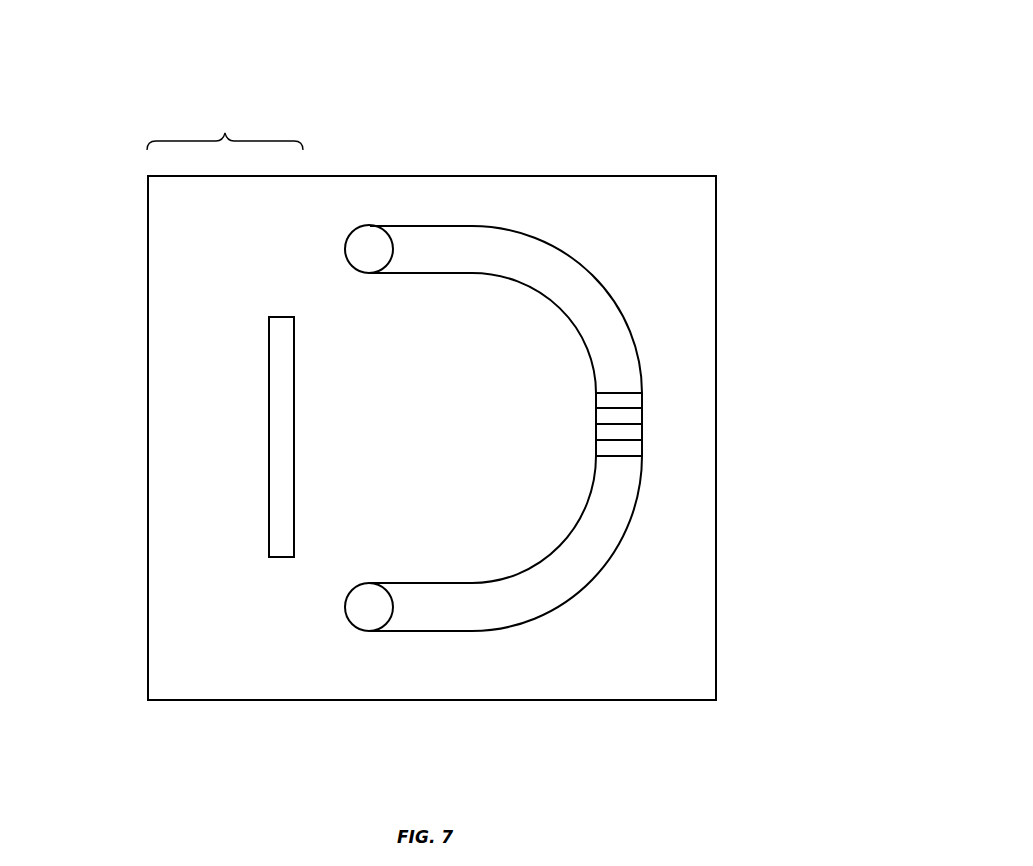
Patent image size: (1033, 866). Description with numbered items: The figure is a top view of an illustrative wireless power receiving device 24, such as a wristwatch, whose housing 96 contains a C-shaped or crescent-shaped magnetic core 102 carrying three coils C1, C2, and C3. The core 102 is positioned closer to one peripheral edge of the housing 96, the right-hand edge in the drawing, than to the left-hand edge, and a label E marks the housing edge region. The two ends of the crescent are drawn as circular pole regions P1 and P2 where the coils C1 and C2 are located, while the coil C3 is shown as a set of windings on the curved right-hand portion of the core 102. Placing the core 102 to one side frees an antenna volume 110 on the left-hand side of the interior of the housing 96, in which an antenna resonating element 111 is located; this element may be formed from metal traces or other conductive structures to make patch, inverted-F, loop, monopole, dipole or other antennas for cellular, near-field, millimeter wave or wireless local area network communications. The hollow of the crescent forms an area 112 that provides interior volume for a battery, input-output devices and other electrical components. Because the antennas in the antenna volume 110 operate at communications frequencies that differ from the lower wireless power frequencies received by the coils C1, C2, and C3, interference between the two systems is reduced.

The device 24 is at (622, 94).
The housing 96 is at (240, 700).
The antenna volume 110 is at (225, 131).
The antenna resonating element 111 is at (278, 352).
The core 102 is at (583, 577).
The area 112 is at (471, 546).
The edge E is at (148, 405).
The first pad P1 is at (368, 595).
The second pad P2 is at (372, 240).
The coil C1 is at (350, 622).
The coil C2 is at (366, 274).
The coil C3 is at (575, 391).